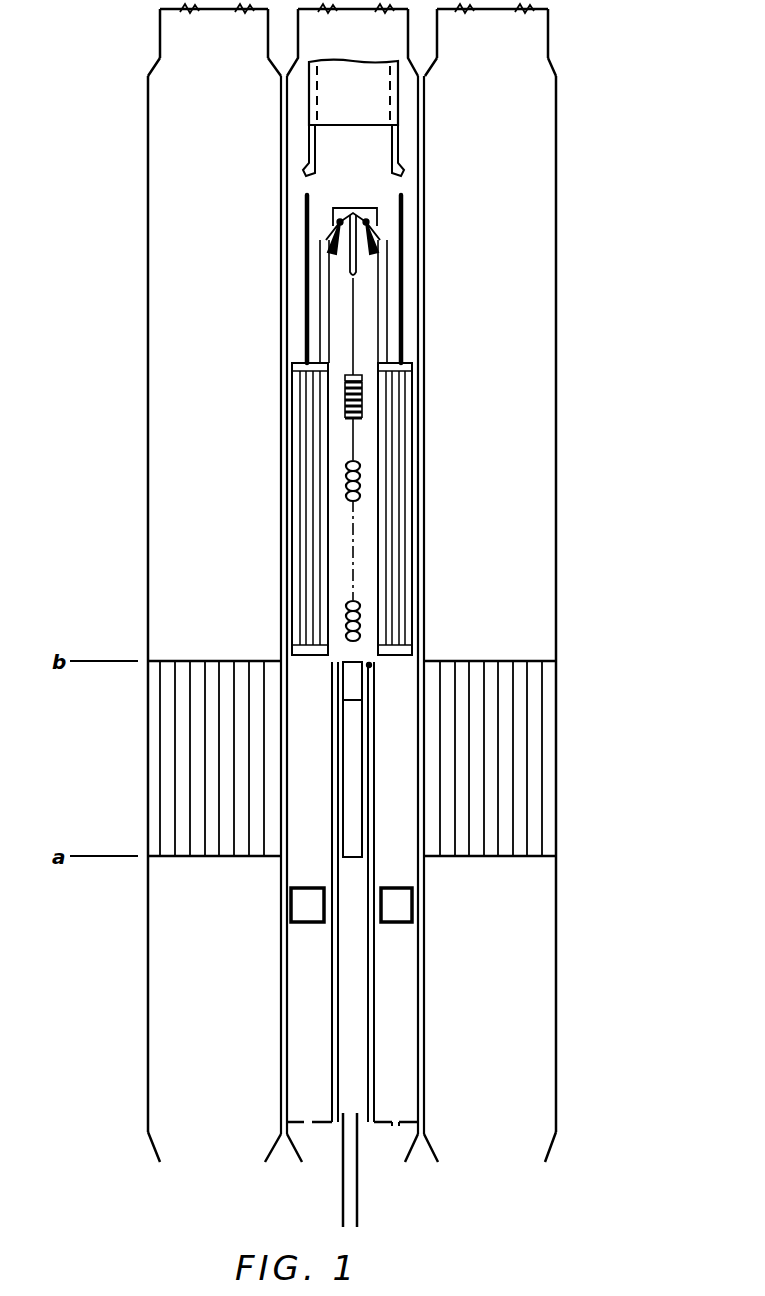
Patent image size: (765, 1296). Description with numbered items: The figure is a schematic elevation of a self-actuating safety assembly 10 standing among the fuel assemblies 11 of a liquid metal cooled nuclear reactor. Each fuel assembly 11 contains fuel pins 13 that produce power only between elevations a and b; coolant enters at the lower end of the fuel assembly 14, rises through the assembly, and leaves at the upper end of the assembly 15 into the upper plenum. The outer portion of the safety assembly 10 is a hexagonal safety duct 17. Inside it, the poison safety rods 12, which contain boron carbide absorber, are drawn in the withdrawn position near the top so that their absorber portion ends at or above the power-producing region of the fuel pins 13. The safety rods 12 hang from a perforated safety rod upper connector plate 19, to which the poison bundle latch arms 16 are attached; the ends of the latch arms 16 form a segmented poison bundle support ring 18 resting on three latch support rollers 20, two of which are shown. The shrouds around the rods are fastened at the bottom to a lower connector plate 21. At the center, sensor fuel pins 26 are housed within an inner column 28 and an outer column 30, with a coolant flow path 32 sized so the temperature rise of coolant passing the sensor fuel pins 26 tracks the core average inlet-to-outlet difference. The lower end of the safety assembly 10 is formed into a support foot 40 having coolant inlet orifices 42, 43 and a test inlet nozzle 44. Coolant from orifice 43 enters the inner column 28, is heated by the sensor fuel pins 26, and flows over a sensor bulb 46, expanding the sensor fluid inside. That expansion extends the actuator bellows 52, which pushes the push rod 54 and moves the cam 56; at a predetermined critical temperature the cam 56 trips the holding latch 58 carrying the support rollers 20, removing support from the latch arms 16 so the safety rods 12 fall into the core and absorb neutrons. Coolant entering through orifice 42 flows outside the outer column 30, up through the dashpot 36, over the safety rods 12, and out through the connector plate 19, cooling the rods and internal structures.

The safety assembly 10 is at (432, 182).
The fuel assemblies 11 is at (146, 270).
The poison safety rods 12 is at (413, 512).
The fuel pins 13 is at (205, 686).
The lower end of the fuel assembly 14 is at (152, 1150).
The upper end of the assembly 15 is at (150, 66).
The poison bundle latch arms 16 is at (396, 292).
The safety duct 17 is at (413, 440).
The segmented poison bundle support ring 18 is at (382, 228).
The safety rod upper connector plate 19 is at (413, 372).
The latch support rollers 20 is at (388, 250).
The lower connector plate 21 is at (414, 650).
The sensor fuel pins 26 is at (362, 690).
The inner column 28 is at (376, 1033).
The outer column 30 is at (373, 1012).
The coolant flow path 32 is at (343, 836).
The dashpot 36 is at (290, 904).
The support foot 40 is at (412, 1164).
The coolant inlet orifice 42 is at (396, 1126).
The coolant inlet orifice 43 is at (310, 1125).
The test inlet nozzle 44 is at (360, 1206).
The sensor bulb 46 is at (344, 486).
The actuator bellows 52 is at (344, 397).
The push rod 54 is at (350, 326).
The cam 56 is at (332, 262).
The holding latch 58 is at (338, 233).